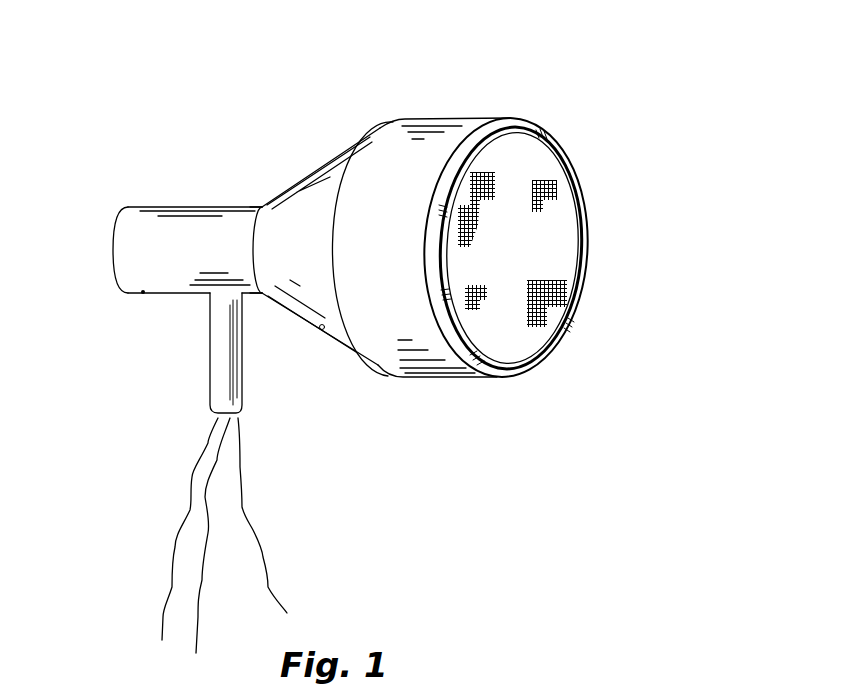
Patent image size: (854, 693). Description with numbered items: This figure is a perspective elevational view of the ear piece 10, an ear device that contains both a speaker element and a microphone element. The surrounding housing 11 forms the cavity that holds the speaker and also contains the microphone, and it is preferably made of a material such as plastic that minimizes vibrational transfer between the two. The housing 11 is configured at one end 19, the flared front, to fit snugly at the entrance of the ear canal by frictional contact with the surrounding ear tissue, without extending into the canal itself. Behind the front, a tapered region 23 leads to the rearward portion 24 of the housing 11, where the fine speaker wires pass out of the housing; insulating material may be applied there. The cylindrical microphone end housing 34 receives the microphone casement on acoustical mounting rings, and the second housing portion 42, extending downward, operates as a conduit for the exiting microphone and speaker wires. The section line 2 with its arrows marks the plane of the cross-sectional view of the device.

The section line 2 is at (33, 245).
The ear piece 10 is at (531, 104).
The surrounding housing 11 is at (401, 148).
The one end of the housing 19 is at (480, 375).
The conical section 23 is at (308, 207).
The rearward portion of the housing 24 is at (262, 207).
The microphone end housing 34 is at (123, 293).
The second housing portion 42 is at (227, 358).